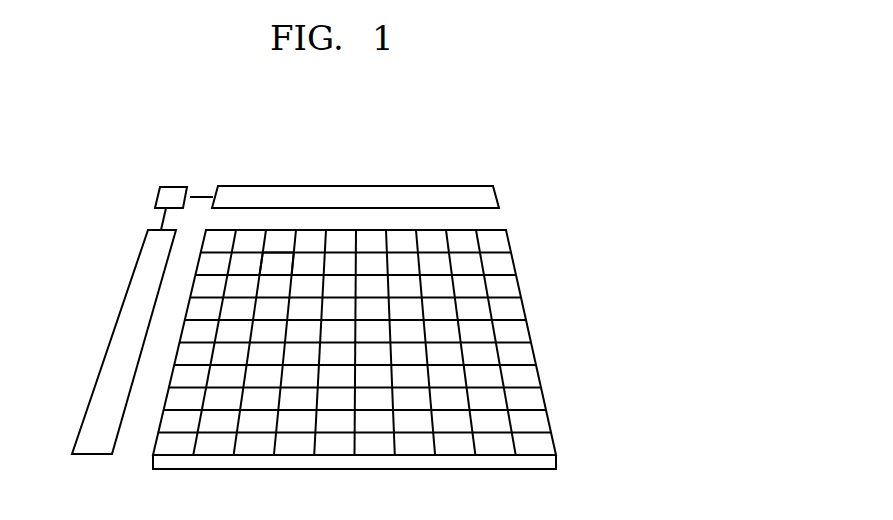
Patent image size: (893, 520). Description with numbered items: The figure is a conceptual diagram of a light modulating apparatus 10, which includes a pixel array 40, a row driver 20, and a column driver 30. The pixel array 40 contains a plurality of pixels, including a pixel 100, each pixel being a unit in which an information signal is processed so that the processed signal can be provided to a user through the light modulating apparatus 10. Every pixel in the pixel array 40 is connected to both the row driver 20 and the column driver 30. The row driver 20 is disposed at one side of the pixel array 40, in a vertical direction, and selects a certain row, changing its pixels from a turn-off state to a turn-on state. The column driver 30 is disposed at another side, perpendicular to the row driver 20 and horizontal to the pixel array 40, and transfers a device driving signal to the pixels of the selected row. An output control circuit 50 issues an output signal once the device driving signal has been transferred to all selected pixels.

The light modulating apparatus 10 is at (88, 125).
The row driver 20 is at (117, 337).
The column driver 30 is at (418, 192).
The pixel array 40 is at (547, 393).
The output control circuit 50 is at (170, 187).
The pixel 100 is at (284, 263).